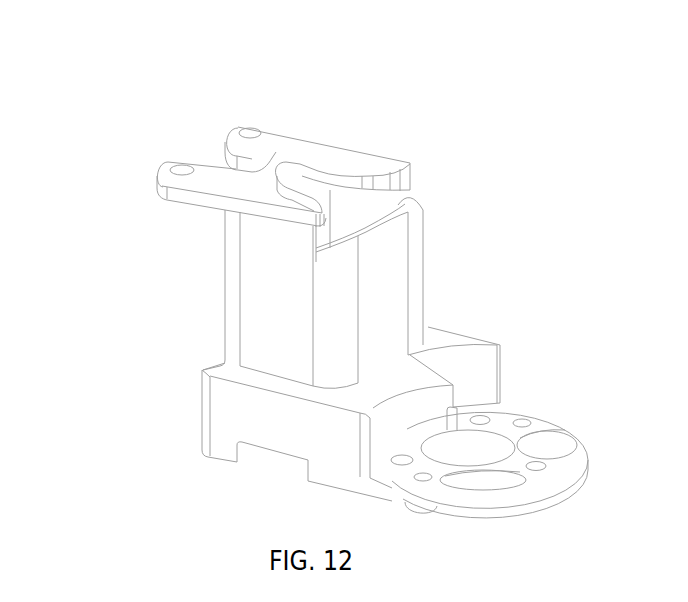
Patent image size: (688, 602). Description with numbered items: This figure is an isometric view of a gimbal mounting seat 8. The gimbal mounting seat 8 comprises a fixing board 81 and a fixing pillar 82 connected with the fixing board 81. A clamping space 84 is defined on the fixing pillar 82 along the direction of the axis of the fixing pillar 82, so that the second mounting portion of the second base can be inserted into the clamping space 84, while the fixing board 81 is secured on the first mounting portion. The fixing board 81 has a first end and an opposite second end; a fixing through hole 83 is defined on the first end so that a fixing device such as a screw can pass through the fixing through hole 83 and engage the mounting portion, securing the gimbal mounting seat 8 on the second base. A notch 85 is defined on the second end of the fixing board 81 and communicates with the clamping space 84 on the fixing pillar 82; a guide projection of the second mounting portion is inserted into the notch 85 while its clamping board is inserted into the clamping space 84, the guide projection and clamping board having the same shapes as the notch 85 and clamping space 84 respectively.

The gimbal mounting seat 8 is at (50, 46).
The fixing board 81 is at (316, 157).
The fixing pillar 82 is at (390, 307).
The fixing through hole 83 is at (253, 134).
The clamping space 84 is at (397, 203).
The notch 85 is at (328, 177).